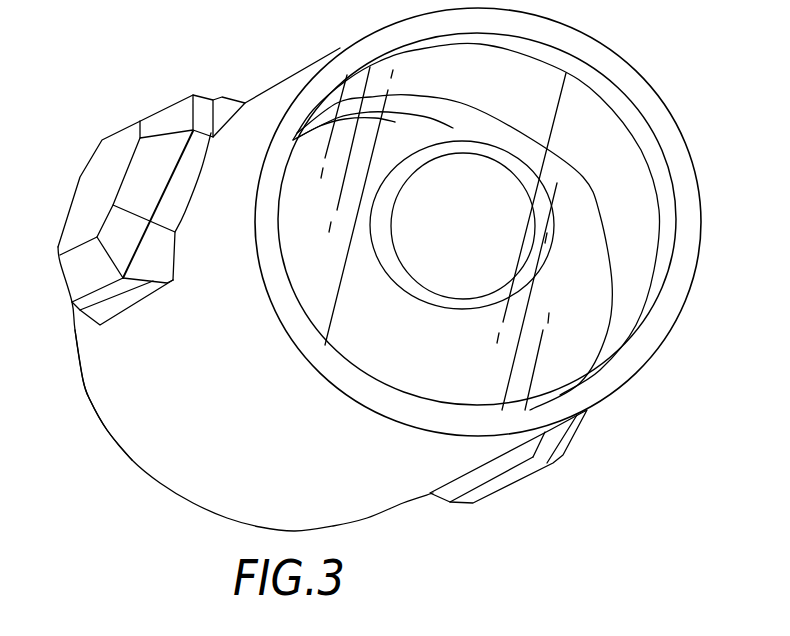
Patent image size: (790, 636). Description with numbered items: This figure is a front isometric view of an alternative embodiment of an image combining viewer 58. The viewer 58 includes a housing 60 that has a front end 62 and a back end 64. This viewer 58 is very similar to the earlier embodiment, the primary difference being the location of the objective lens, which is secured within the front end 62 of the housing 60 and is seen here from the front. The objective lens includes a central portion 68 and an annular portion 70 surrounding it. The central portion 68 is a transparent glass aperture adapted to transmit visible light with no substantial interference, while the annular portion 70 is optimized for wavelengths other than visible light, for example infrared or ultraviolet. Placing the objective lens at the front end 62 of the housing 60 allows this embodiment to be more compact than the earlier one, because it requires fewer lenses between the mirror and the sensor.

The image combining viewer 58 is at (433, 508).
The housing 60 is at (184, 365).
The front end 62 is at (640, 78).
The back end 64 is at (90, 398).
The central portion 68 is at (469, 230).
The annular portion 70 is at (414, 351).